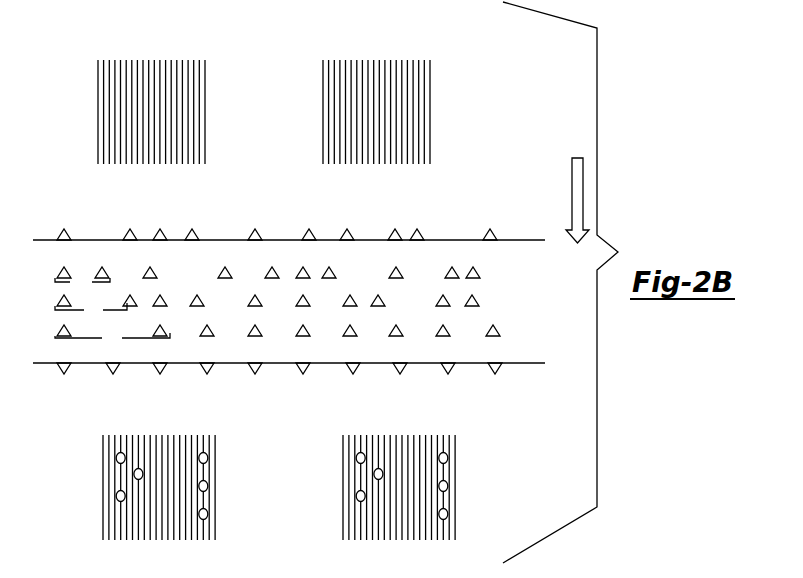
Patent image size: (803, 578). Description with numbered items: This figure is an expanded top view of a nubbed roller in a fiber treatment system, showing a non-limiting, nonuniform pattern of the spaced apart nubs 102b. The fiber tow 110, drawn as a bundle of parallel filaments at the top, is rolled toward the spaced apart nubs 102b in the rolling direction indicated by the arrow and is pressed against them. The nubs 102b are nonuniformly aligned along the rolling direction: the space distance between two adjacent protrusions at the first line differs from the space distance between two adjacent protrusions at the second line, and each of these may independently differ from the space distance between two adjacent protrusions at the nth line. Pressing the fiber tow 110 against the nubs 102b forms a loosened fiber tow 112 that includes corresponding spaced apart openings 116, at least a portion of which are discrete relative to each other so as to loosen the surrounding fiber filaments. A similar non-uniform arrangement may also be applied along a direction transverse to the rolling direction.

The fiber tow 110 is at (99, 124).
The spaced apart nubs 102b is at (518, 314).
The loosened fiber tow 112 is at (103, 492).
The spaced apart openings 116 is at (113, 452).